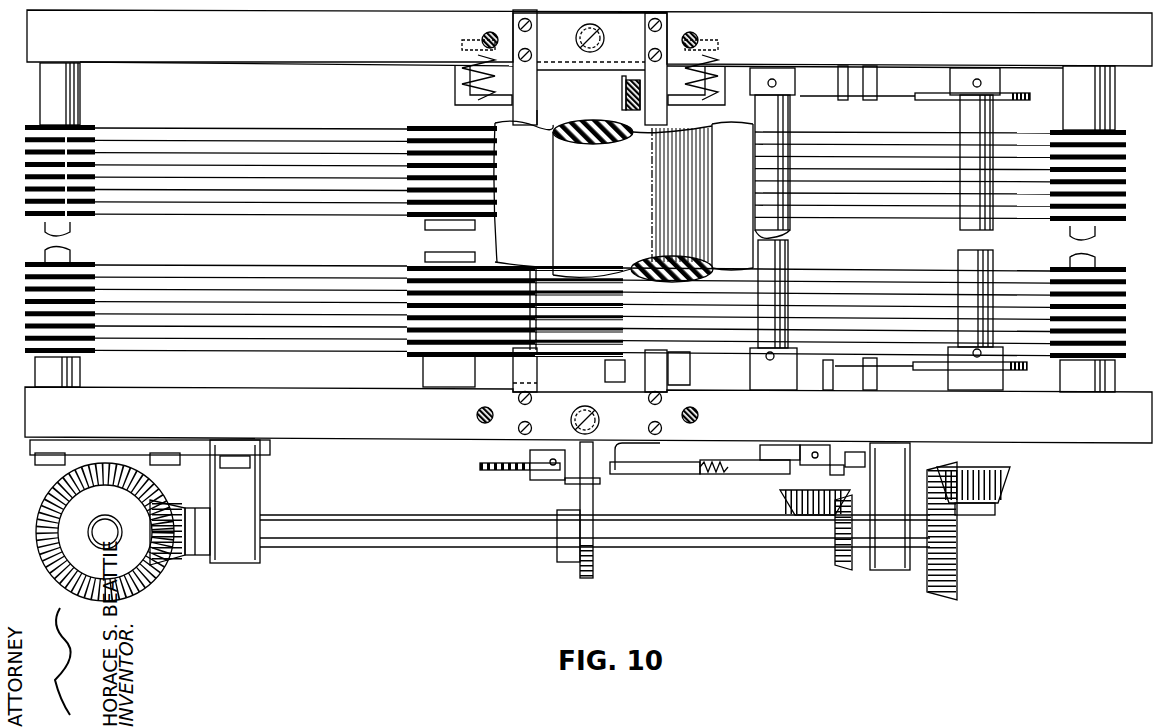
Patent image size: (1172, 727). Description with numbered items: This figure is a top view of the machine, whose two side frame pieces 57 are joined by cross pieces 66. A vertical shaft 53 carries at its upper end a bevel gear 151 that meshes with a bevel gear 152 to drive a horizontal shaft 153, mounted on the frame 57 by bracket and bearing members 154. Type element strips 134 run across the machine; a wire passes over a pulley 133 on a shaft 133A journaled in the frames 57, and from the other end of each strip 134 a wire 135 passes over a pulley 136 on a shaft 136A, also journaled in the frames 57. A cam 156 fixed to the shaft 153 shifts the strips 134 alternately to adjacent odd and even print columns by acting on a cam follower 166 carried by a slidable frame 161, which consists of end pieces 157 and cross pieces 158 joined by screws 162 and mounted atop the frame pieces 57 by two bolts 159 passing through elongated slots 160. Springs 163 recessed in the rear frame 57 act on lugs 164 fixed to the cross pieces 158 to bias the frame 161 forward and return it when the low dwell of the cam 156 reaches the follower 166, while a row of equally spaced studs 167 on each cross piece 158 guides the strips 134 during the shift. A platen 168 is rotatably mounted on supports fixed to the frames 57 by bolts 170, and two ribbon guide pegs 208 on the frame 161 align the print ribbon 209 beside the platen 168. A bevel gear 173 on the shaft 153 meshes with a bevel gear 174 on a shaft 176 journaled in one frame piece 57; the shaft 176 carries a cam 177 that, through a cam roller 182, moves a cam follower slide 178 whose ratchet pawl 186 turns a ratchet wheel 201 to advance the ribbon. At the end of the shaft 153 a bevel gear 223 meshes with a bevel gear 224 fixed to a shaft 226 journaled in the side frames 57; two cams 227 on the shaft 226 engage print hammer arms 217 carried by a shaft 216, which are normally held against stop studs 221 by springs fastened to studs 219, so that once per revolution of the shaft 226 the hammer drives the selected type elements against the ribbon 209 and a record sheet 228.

The side frame piece 57 is at (250, 55).
The end piece 157 is at (545, 62).
The cross piece 158 is at (522, 114).
The bolt 159 is at (600, 47).
The elongated slot 160 is at (595, 30).
The screw 162 is at (531, 52).
The bolt 170 is at (482, 40).
The spring 163 is at (462, 80).
The lug 164 is at (455, 102).
The ribbon guide peg 208 is at (626, 90).
The print ribbon 209 is at (628, 110).
The pulley 136 is at (88, 262).
The shaft 136A is at (75, 372).
The wire 135 is at (228, 190).
The type element strip 134 is at (415, 232).
The record sheet 228 is at (503, 233).
The platen 168 is at (622, 193).
The stud 167 is at (530, 290).
The pulley 133 is at (1052, 228).
The shaft 133A is at (1085, 382).
The print hammer arm 217 is at (808, 96).
The shaft 216 is at (785, 262).
The shaft 226 is at (960, 262).
The cam 227 is at (1030, 88).
The stop stud 221 is at (843, 100).
The stud 219 is at (877, 90).
The cross piece 66 is at (425, 370).
The slidable frame 161 is at (508, 384).
The bevel gear 151 is at (143, 596).
The vertical shaft 53 is at (108, 540).
The bevel gear 152 is at (182, 558).
The bracket and bearing member 154 is at (255, 490).
The shaft 153 is at (435, 548).
The cam 156 is at (595, 570).
The ratchet wheel 201 is at (515, 472).
The cam follower 166 is at (580, 484).
The ratchet pawl 186 is at (635, 474).
The cam follower slide 178 is at (735, 474).
The bevel gear 174 is at (780, 495).
The shaft 176 is at (826, 470).
The cam 177 is at (850, 452).
The cam roller 182 is at (780, 445).
The bevel gear 173 is at (835, 560).
The bevel gear 223 is at (955, 580).
The bevel gear 224 is at (1005, 485).